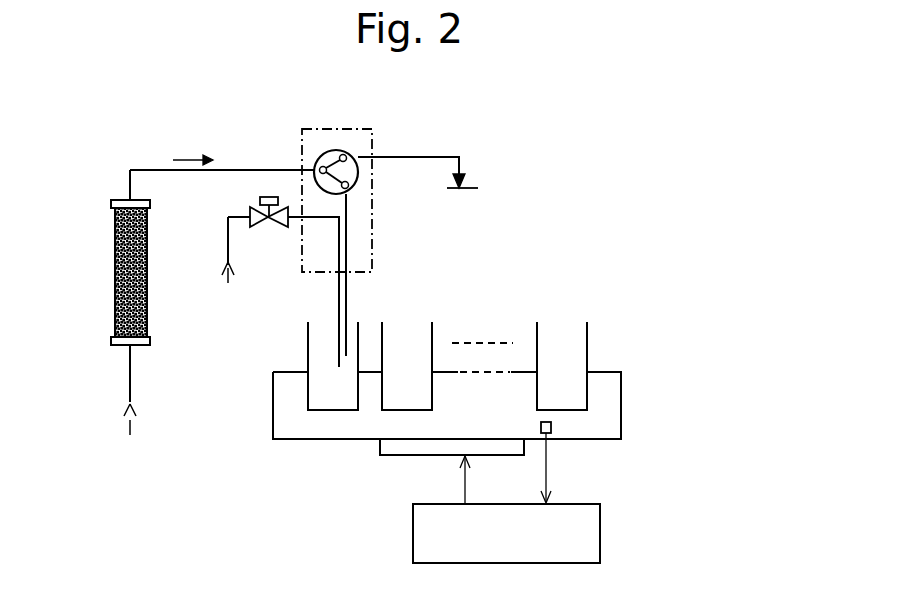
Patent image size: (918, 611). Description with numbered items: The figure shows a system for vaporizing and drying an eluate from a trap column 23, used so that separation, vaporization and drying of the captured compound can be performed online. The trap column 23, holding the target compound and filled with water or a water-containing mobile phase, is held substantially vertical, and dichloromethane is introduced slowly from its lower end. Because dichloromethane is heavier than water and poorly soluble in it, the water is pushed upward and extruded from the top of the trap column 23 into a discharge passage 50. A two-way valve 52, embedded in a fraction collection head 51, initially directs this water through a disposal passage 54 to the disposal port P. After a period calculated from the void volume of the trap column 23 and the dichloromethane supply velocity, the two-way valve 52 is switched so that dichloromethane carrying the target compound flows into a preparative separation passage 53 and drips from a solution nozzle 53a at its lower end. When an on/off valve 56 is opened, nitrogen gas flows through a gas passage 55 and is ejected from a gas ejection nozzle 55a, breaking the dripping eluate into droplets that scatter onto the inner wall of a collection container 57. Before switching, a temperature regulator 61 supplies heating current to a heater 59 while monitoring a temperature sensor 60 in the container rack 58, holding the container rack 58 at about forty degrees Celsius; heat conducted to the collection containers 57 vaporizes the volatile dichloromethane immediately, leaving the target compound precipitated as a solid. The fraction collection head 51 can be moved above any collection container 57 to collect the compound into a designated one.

The trap column 23 is at (115, 283).
The discharge passage 50 is at (136, 168).
The fraction collection head 51 is at (372, 205).
The two-way valve 52 is at (328, 152).
The preparative separation passage 53 is at (348, 232).
The solution nozzle 53a is at (343, 367).
The disposal passage 54 is at (408, 157).
The gas passage 55 is at (339, 298).
The gas ejection nozzle 55a is at (338, 357).
The on/off valve 56 is at (250, 212).
The collection container 57 is at (340, 411).
The container rack 58 is at (296, 440).
The heater 59 is at (405, 456).
The temperature sensor 60 is at (551, 425).
The temperature regulator 61 is at (413, 538).